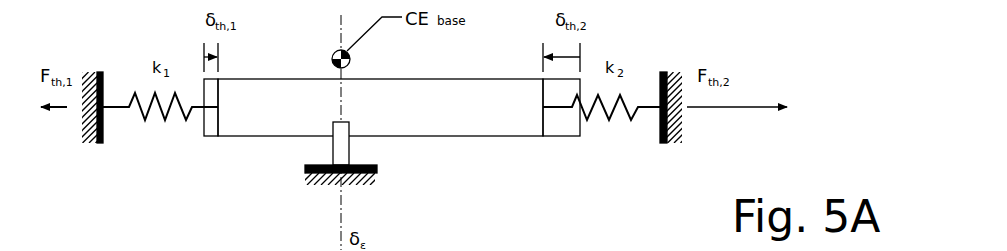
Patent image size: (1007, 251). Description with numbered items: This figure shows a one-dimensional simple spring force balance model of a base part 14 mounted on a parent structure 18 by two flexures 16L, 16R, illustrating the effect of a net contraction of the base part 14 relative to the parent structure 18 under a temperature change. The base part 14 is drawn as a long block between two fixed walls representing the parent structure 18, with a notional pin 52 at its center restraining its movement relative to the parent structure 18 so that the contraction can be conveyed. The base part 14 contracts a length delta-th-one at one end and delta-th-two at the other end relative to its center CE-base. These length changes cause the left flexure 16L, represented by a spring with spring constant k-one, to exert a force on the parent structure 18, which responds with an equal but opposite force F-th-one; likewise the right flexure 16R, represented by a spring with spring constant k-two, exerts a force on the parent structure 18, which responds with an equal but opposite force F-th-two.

The base part 14 is at (440, 79).
The parent structure 18 is at (99, 72).
The flexure 16L is at (161, 156).
The right flexure 16R is at (632, 156).
The notional pin 52 is at (349, 145).